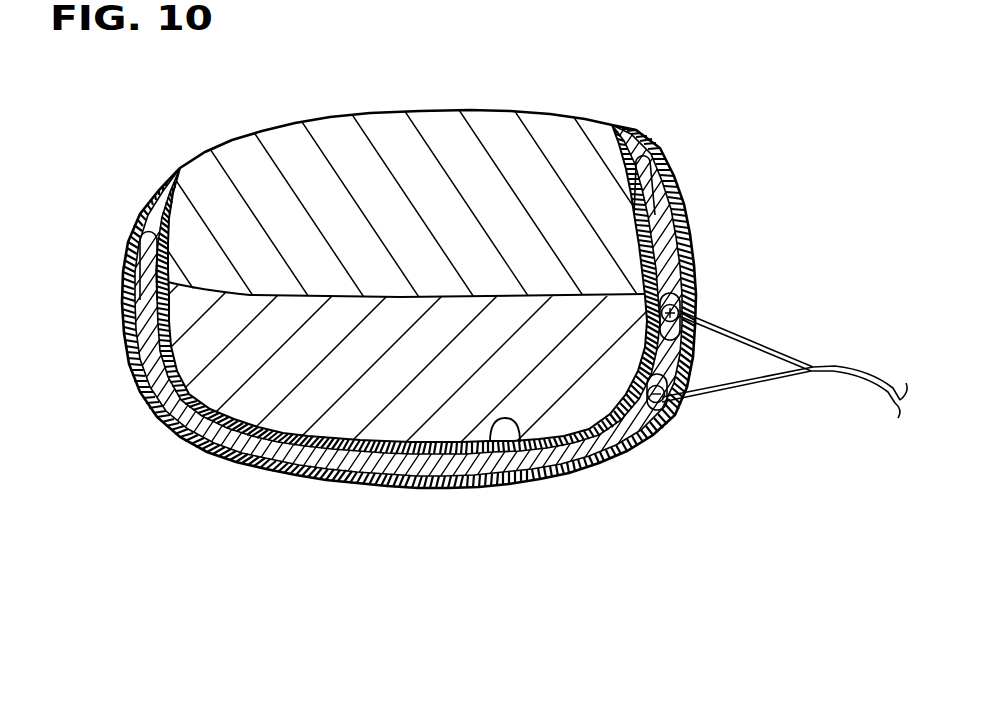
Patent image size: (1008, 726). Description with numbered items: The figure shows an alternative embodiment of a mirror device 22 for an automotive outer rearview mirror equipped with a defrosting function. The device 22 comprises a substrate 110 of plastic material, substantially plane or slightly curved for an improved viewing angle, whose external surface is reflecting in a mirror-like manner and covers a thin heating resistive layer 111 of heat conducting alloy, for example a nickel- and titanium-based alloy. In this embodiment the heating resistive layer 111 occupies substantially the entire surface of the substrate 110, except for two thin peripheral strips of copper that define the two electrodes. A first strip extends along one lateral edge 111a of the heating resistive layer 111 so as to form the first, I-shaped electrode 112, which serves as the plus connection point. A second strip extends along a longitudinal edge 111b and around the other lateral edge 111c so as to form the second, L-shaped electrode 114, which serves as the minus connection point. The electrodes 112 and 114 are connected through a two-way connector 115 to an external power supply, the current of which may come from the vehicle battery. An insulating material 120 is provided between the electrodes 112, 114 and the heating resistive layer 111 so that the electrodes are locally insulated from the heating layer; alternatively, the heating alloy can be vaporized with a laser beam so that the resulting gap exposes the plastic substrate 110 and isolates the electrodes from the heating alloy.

The mirror device 22 is at (383, 75).
The substrate 110 is at (143, 213).
The heating resistive layer 111 is at (247, 157).
The lateral edge 111a is at (670, 176).
The longitudinal edge 111b is at (382, 486).
The other lateral edge 111c is at (132, 310).
The first electrode 112 is at (688, 294).
The second electrode 114 is at (658, 415).
The two-way connector 115 is at (855, 378).
The insulating material 120 is at (525, 440).